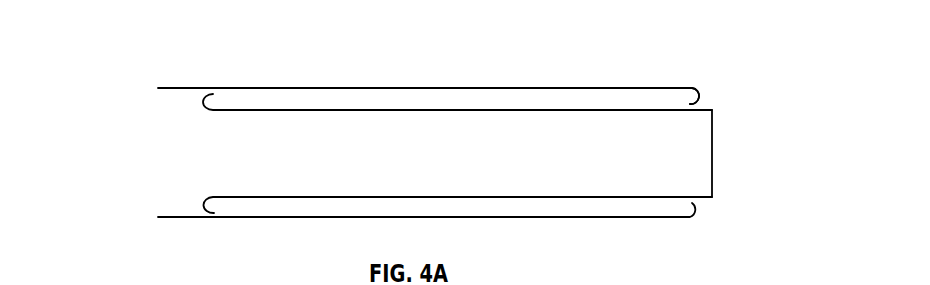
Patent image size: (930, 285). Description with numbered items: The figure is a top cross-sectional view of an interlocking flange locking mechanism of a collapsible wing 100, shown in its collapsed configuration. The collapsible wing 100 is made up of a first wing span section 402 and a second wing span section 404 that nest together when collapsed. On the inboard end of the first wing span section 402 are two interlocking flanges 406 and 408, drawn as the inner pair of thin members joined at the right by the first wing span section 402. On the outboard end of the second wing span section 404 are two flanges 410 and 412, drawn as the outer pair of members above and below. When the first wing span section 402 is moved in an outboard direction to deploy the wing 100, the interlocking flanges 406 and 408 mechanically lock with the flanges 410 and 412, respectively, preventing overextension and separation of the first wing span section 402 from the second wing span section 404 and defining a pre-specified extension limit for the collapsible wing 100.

The collapsible wing 100 is at (475, 55).
The first wing span section 402 is at (712, 110).
The second wing span section 404 is at (180, 88).
The interlocking flange 406 is at (206, 196).
The interlocking flange 408 is at (203, 101).
The flange 410 is at (697, 82).
The flange 412 is at (695, 208).